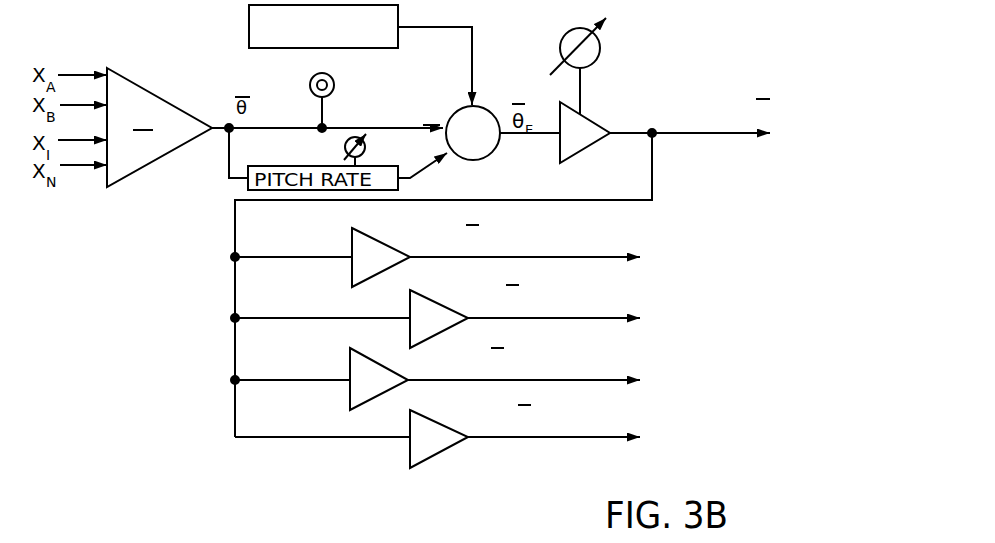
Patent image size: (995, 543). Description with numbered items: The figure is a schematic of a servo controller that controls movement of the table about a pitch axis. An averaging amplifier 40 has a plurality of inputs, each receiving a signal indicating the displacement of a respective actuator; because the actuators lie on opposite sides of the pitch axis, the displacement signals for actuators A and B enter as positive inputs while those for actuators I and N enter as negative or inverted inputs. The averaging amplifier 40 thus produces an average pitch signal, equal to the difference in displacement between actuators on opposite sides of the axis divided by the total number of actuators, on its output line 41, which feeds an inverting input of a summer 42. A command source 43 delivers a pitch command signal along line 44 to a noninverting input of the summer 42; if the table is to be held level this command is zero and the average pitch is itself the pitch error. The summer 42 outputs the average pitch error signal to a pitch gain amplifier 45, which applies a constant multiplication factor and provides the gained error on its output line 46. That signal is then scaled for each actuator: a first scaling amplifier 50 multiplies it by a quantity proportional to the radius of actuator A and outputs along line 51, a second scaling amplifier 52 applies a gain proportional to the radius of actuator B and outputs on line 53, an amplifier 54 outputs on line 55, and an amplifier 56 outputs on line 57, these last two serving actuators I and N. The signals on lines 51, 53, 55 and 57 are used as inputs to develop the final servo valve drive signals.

The averaging amplifier 40 is at (163, 145).
The output line 41 is at (303, 131).
The summer 42 is at (446, 140).
The command source 43 is at (399, 36).
The line 44 is at (478, 43).
The pitch gain amplifier 45 is at (591, 115).
The output line 46 is at (733, 136).
The first scaling amplifier 50 is at (378, 244).
The line 51 is at (572, 257).
The second scaling amplifier 52 is at (432, 300).
The line 53 is at (606, 316).
The amplifier 54 is at (388, 369).
The line 55 is at (608, 380).
The amplifier 56 is at (443, 423).
The line 57 is at (618, 437).